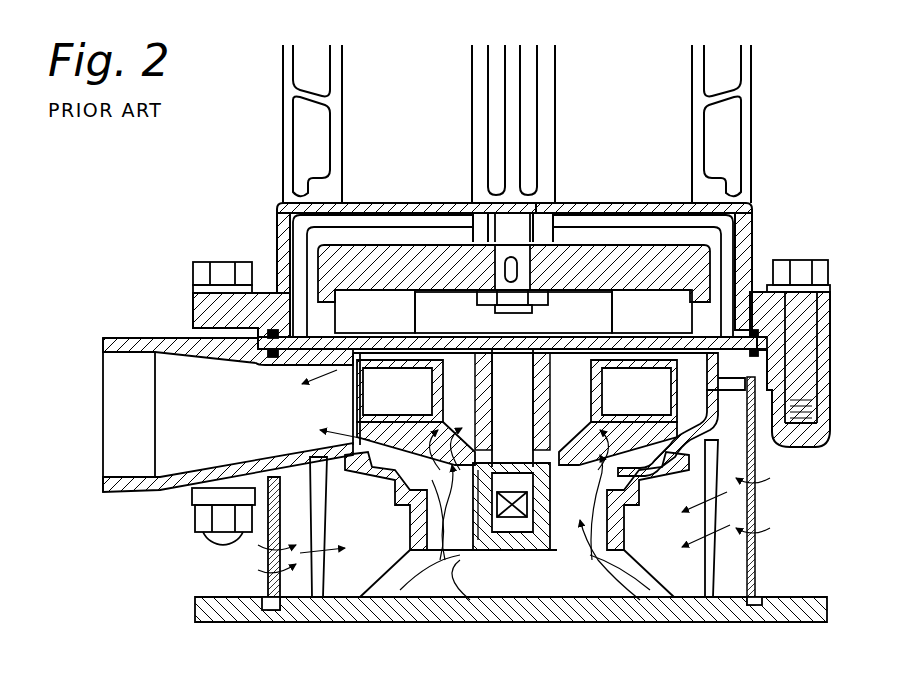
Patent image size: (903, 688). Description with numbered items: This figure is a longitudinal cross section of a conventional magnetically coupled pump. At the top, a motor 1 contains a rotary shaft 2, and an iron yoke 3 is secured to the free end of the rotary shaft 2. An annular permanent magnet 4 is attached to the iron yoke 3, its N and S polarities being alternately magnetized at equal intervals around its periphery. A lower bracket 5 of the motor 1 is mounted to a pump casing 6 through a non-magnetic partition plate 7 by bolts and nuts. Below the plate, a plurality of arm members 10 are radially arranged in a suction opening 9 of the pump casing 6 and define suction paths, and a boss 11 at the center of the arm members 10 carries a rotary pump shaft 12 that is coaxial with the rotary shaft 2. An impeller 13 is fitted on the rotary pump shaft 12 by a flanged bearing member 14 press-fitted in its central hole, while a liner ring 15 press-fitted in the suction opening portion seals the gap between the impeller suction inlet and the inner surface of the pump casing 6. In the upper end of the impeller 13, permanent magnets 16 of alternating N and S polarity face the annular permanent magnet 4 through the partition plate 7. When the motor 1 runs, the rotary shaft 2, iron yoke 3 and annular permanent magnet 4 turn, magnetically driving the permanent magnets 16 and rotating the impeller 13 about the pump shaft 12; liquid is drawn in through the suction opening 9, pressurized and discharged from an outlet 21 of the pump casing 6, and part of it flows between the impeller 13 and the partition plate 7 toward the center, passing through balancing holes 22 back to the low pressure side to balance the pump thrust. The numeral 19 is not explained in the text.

The motor 1 is at (752, 128).
The rotary shaft 2 is at (540, 208).
The iron yoke 3 is at (705, 247).
The annular permanent magnet 4 is at (345, 300).
The lower bracket 5 is at (752, 250).
The pump casing 6 is at (660, 483).
The non-magnetic partition plate 7 is at (257, 363).
The suction opening 9 is at (452, 533).
The arm members 10 is at (467, 540).
The boss 11 is at (528, 540).
The rotary pump shaft 12 is at (522, 370).
The impeller 13 is at (347, 531).
The bearing member 14 is at (563, 550).
The liner ring 15 is at (628, 555).
The permanent magnets 16 is at (360, 398).
The strut 19 is at (757, 445).
The outlet 21 is at (133, 350).
The balancing holes 22 is at (483, 420).